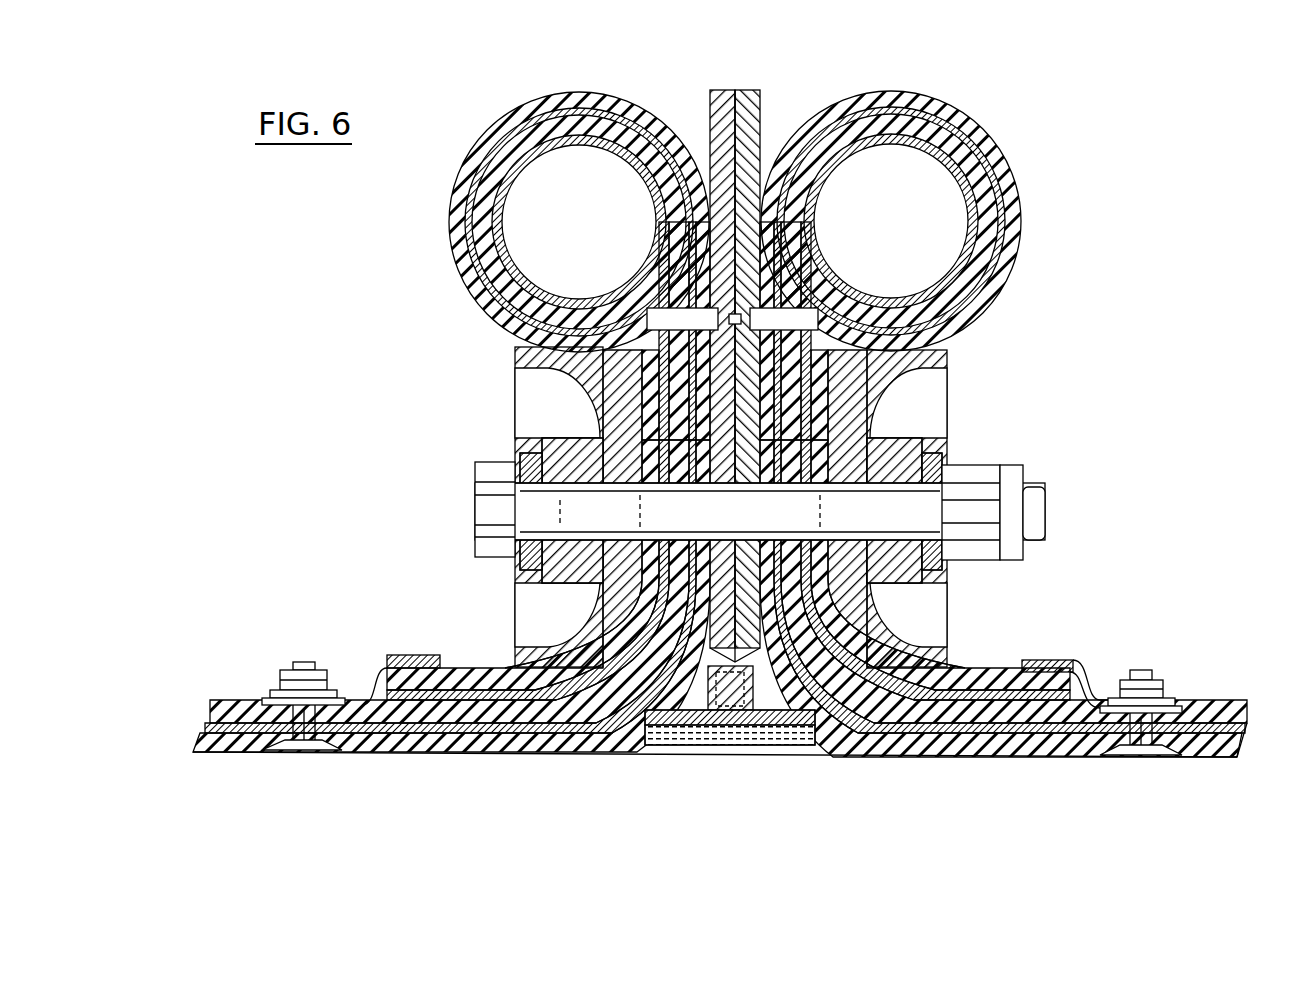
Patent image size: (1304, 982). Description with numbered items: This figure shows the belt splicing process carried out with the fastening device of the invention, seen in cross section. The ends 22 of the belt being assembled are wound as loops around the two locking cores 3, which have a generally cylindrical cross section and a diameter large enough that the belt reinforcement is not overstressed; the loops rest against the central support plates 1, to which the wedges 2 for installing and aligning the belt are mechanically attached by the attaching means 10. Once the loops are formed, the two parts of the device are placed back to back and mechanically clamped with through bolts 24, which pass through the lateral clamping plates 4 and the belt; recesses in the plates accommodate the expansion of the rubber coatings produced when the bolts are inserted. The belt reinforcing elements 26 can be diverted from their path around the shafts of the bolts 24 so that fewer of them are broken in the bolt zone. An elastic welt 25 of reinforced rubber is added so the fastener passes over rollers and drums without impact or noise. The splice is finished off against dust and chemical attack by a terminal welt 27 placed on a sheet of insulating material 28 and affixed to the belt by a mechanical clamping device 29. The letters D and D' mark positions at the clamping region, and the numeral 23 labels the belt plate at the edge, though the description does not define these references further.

The central support plate 1 is at (710, 93).
The ends of the belt 22 is at (807, 132).
The locking core 3 is at (1014, 200).
The attaching means 10 is at (813, 314).
The wedge 2 is at (958, 343).
The lateral clamping plate 4 is at (947, 358).
The upper hub diameter D is at (765, 491).
The through bolt 24 is at (478, 472).
The lower hub diameter D' is at (761, 526).
The sheet of insulating material 28 is at (1013, 668).
The terminal welt 27 is at (1097, 667).
The mechanical clamping device 29 is at (1163, 682).
The reinforcing elements 26 is at (1213, 720).
The base plate 23 is at (1237, 752).
The elastic welt 25 is at (663, 742).